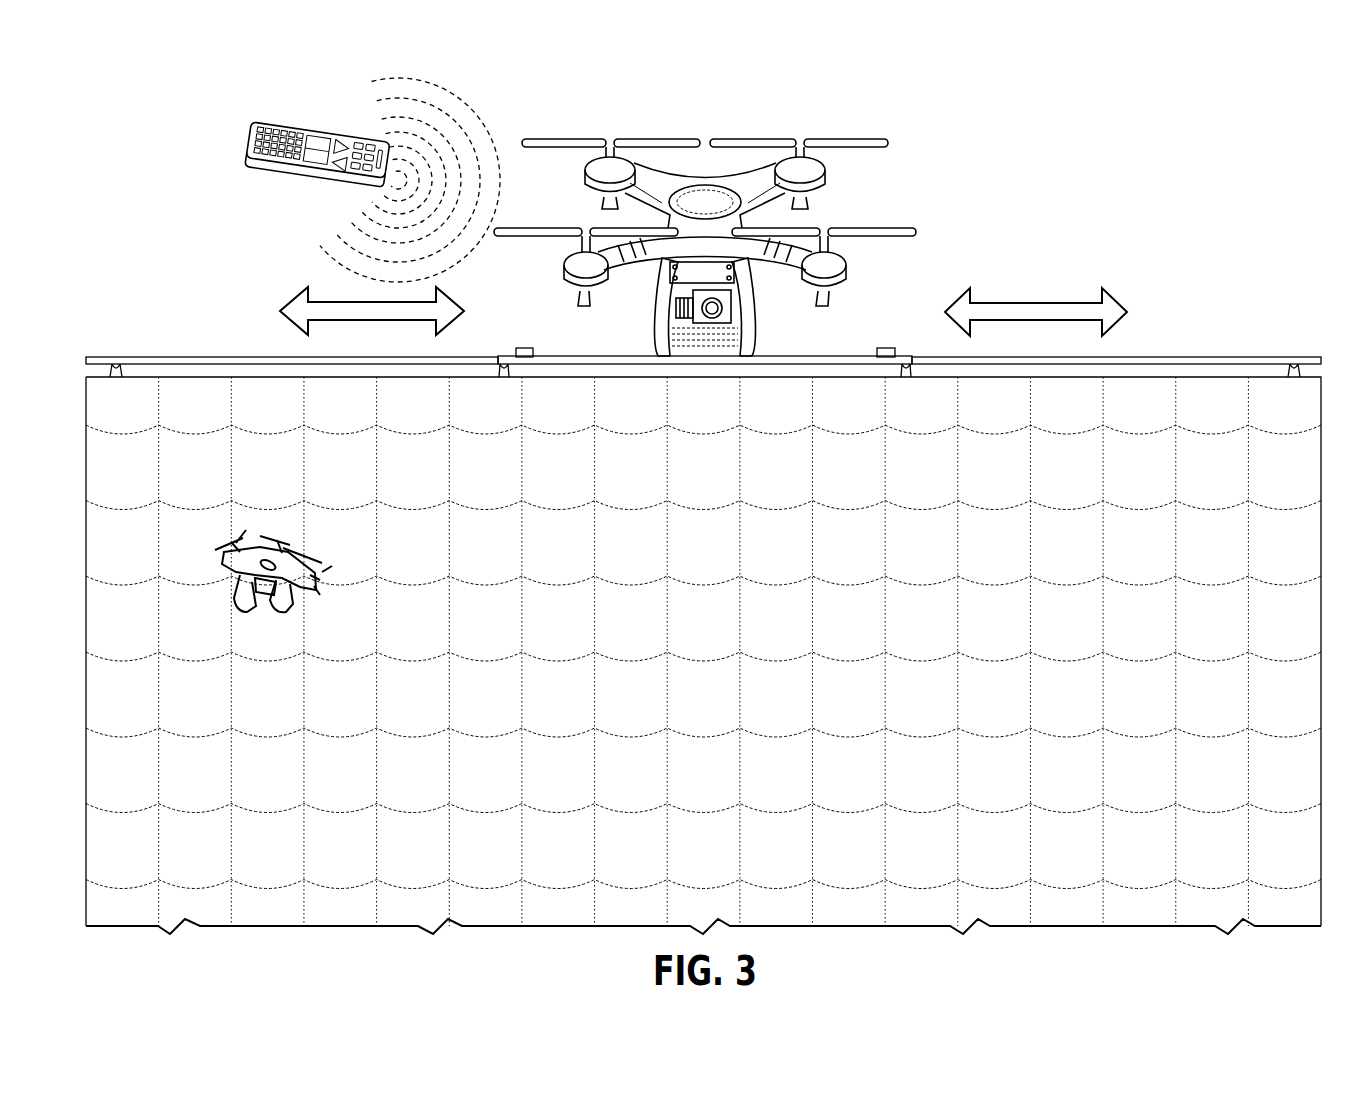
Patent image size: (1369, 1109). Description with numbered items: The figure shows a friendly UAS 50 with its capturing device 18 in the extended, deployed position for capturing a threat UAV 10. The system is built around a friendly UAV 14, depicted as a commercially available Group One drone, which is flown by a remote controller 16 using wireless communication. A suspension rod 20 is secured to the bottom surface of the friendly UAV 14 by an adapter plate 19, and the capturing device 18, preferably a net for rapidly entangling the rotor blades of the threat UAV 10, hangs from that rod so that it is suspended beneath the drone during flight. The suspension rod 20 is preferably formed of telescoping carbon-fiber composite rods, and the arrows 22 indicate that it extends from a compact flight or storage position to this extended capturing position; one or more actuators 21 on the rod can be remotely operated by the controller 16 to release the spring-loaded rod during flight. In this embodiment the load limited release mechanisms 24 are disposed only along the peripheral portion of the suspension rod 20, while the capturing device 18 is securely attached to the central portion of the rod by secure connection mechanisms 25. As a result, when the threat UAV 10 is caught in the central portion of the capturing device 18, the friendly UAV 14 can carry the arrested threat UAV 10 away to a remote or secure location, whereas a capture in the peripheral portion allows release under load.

The threat UAV 10 is at (320, 585).
The friendly UAV 14 is at (875, 138).
The remote controller 16 is at (252, 140).
The capturing device 18 is at (1177, 460).
The adapter plate 19 is at (718, 357).
The suspension rod 20 is at (272, 357).
The actuators 21 is at (516, 350).
The arrows 22 is at (330, 301).
The load limited release mechanisms 24 is at (116, 362).
The secure connection mechanisms 25 is at (505, 366).
The friendly UAS 50 is at (1022, 162).